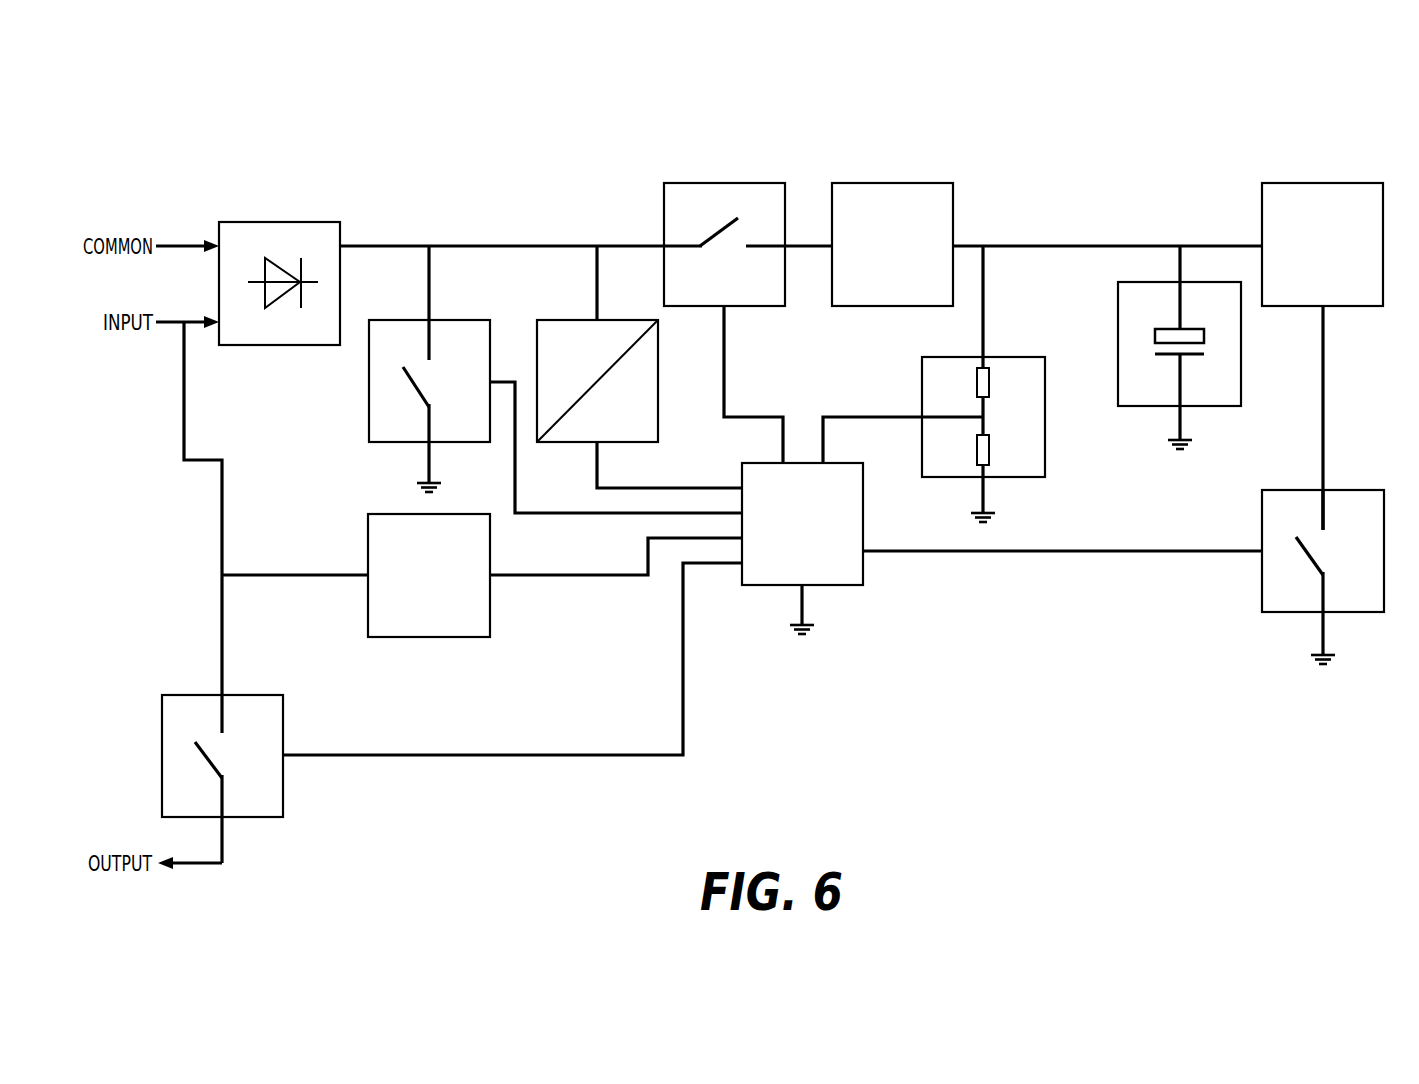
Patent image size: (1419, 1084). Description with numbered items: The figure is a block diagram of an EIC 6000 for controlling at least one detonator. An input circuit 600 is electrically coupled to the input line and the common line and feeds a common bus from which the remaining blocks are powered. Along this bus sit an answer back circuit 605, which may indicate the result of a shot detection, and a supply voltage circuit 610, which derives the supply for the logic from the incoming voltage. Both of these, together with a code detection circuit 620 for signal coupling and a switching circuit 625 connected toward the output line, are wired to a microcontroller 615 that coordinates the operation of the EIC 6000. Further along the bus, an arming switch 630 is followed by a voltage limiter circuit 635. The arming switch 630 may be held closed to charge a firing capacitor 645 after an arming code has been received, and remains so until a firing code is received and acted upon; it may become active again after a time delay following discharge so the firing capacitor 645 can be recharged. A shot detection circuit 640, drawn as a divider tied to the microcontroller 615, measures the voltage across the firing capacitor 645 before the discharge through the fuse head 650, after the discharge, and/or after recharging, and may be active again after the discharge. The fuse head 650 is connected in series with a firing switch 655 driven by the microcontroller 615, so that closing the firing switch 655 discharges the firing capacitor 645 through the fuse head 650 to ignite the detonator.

The EIC 6000 is at (258, 125).
The input circuit 600 is at (314, 222).
The answer back circuit 605 is at (460, 320).
The supply voltage circuit 610 is at (658, 428).
The microcontroller 615 is at (847, 585).
The code detection circuit 620 is at (382, 514).
The switching circuit 625 is at (255, 695).
The arming switch 630 is at (755, 183).
The voltage limiter circuit 635 is at (913, 183).
The shot detection circuit 640 is at (1017, 357).
The firing capacitor 645 is at (1118, 293).
The fuse head 650 is at (1362, 183).
The firing switch 655 is at (1343, 490).